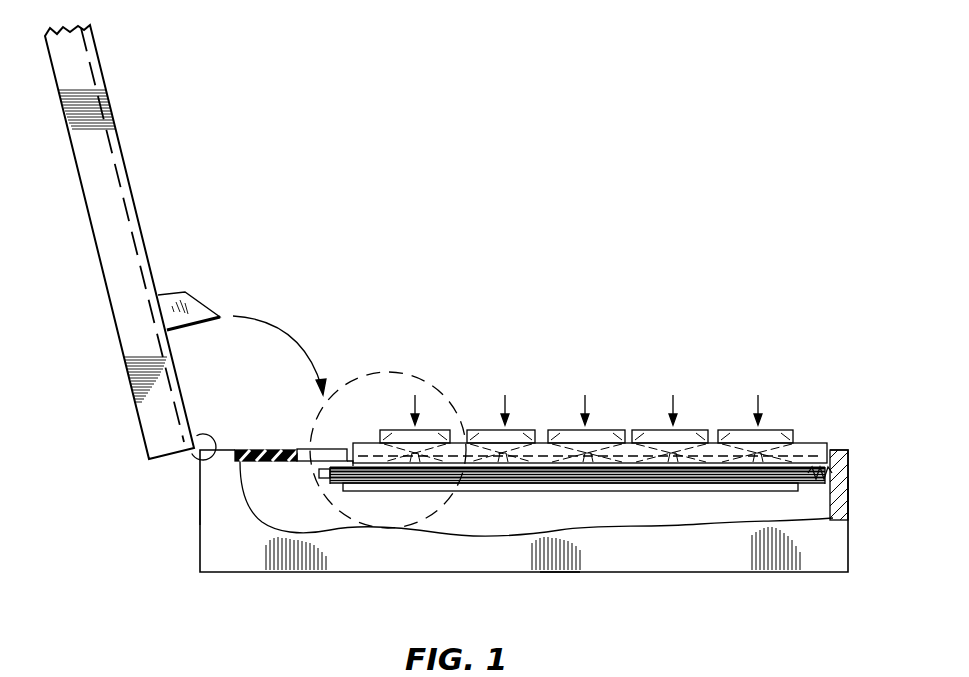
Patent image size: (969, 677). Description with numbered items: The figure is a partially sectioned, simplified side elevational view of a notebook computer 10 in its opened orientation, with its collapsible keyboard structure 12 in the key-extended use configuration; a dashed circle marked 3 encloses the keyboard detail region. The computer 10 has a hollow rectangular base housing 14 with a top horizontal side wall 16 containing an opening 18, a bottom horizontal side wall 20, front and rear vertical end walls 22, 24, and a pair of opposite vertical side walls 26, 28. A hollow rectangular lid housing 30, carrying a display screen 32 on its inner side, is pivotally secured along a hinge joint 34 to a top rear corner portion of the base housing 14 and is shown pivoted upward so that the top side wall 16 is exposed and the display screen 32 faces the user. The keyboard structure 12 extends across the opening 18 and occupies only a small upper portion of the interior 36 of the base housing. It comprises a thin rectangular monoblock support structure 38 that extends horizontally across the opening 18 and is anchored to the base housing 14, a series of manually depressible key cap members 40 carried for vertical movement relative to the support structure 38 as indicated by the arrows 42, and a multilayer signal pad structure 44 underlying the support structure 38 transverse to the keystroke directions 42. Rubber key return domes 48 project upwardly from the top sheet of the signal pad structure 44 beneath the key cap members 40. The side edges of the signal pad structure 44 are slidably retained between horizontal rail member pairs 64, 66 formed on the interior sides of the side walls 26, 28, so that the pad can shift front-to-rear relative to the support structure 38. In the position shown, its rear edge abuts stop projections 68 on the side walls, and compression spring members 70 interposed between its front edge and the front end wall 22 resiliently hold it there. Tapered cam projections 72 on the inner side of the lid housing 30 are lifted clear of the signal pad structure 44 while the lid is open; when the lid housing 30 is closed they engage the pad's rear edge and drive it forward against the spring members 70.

The detail region shown in FIG. 3 is at (413, 376).
The notebook computer 10 is at (108, 485).
The collapsible keyboard structure 12 is at (546, 414).
The base housing 14 is at (342, 575).
The top horizontal side wall 16 is at (250, 447).
The opening 18 is at (312, 447).
The bottom horizontal side wall 20 is at (562, 573).
The front vertical end wall 22 is at (845, 505).
The rear vertical end wall 24 is at (200, 512).
The vertical side wall 26 is at (669, 566).
The vertical side wall 28 is at (716, 530).
The lid housing 30 is at (84, 218).
The display screen 32 is at (128, 172).
The hinge joint 34 is at (190, 462).
The interior 36 is at (624, 512).
The monoblock support structure 38 is at (827, 446).
The key cap members 40 is at (396, 430).
The arrows 42 is at (420, 395).
The multilayer signal pad structure 44 is at (612, 470).
The rubber key return domes 48 is at (452, 440).
The horizontal rail member pair 64 is at (350, 447).
The horizontal rail member pair 66 is at (367, 492).
The stop projections 68 is at (319, 477).
The compression spring members 70 is at (815, 474).
The tapered cam projections 72 is at (193, 296).